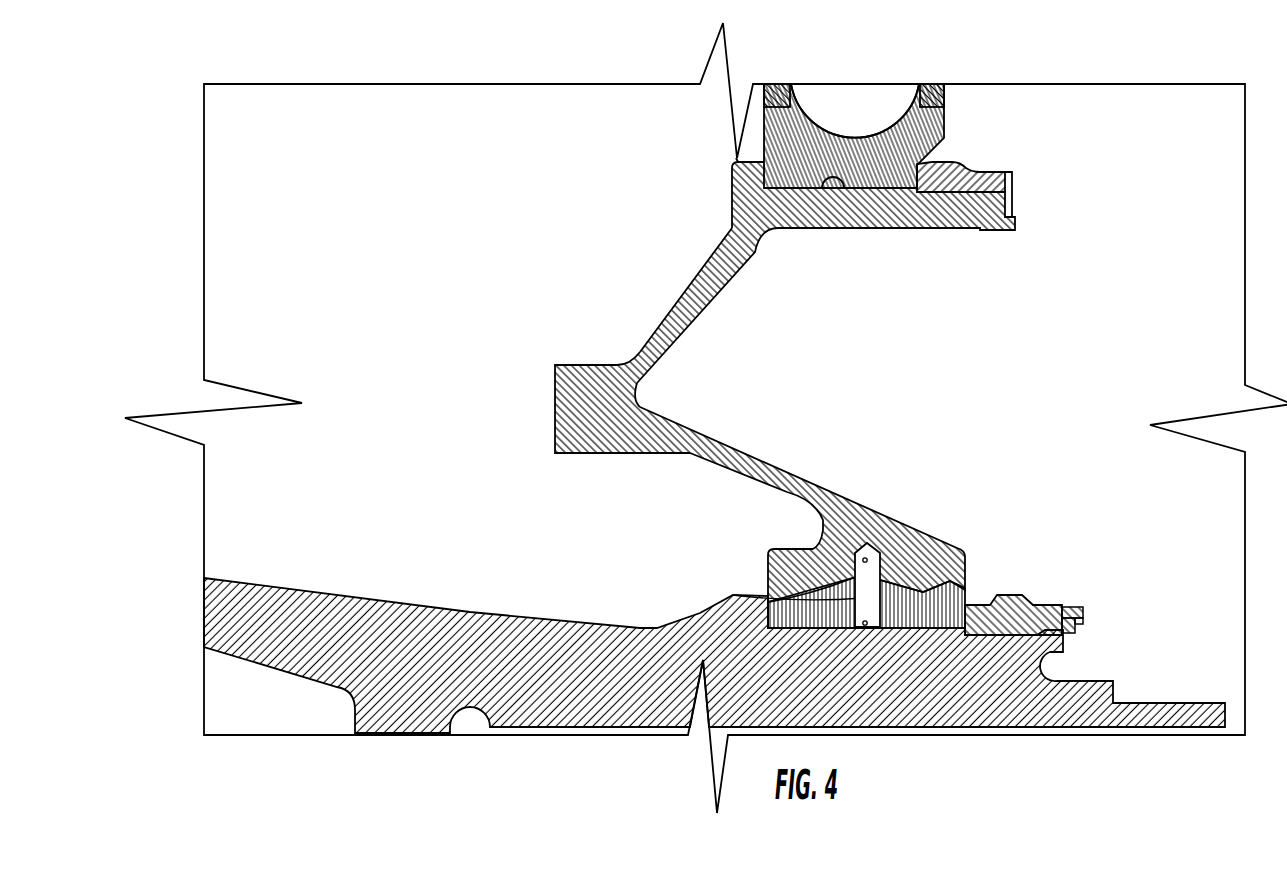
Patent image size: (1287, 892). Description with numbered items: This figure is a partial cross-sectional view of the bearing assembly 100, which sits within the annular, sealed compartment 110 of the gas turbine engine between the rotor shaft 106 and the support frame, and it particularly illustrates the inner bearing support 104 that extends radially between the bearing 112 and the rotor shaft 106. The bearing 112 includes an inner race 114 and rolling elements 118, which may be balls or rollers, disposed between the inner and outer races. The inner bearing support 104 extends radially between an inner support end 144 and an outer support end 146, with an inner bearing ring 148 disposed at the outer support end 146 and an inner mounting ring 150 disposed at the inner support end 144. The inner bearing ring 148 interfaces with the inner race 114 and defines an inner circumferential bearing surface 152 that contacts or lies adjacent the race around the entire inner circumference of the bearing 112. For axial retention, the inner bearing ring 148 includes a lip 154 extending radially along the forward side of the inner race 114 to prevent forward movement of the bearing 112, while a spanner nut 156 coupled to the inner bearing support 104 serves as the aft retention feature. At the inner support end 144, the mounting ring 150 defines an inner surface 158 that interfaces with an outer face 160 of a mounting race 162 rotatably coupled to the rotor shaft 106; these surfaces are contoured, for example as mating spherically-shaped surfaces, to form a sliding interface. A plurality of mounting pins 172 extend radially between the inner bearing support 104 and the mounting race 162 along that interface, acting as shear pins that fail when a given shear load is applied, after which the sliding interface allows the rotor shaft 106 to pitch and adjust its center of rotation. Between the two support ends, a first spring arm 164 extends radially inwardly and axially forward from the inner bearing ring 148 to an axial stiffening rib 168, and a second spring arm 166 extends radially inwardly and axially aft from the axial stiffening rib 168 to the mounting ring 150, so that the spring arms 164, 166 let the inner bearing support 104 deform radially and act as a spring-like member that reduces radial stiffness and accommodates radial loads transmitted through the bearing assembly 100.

The bearing assembly 100 is at (334, 172).
The inner bearing support 104 is at (573, 302).
The rotor shaft 106 is at (337, 603).
The sealed compartment 110 is at (317, 313).
The bearing 112 is at (883, 113).
The inner race 114 is at (933, 125).
The rolling elements 118 is at (870, 130).
The inner support end 144 is at (965, 590).
The outer support end 146 is at (737, 158).
The inner bearing ring 148 is at (900, 217).
The inner mounting ring 150 is at (893, 540).
The inner circumferential bearing surface 152 is at (847, 189).
The lip 154 is at (740, 184).
The spanner nut 156 is at (970, 170).
The inner surface 158 is at (950, 590).
The outer face 160 is at (813, 578).
The mounting race 162 is at (893, 607).
The first spring arm 164 is at (692, 307).
The second spring arm 166 is at (753, 460).
The axial stiffening rib 168 is at (575, 408).
The mounting pins 172 is at (733, 595).